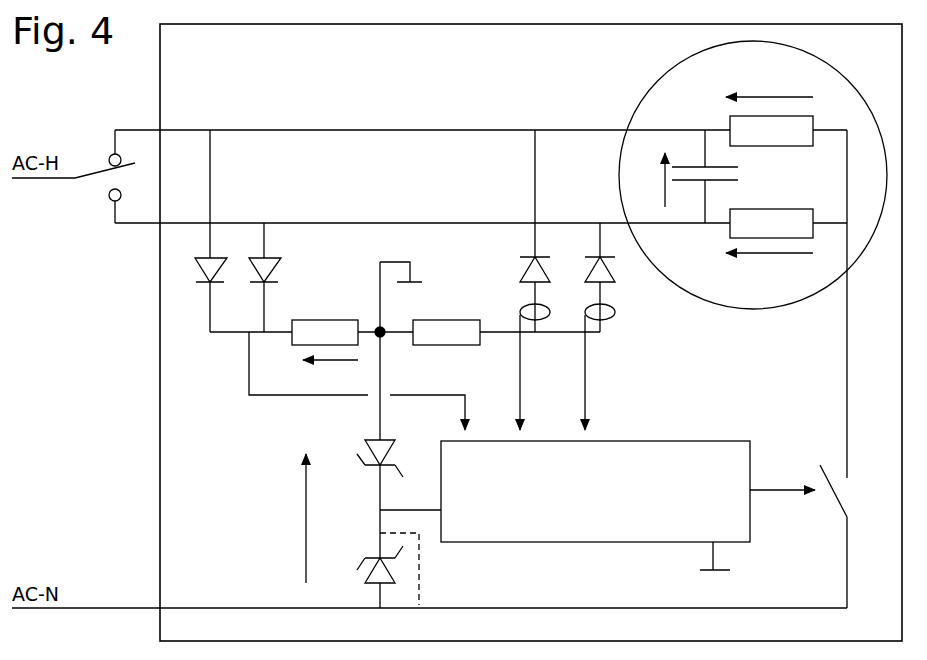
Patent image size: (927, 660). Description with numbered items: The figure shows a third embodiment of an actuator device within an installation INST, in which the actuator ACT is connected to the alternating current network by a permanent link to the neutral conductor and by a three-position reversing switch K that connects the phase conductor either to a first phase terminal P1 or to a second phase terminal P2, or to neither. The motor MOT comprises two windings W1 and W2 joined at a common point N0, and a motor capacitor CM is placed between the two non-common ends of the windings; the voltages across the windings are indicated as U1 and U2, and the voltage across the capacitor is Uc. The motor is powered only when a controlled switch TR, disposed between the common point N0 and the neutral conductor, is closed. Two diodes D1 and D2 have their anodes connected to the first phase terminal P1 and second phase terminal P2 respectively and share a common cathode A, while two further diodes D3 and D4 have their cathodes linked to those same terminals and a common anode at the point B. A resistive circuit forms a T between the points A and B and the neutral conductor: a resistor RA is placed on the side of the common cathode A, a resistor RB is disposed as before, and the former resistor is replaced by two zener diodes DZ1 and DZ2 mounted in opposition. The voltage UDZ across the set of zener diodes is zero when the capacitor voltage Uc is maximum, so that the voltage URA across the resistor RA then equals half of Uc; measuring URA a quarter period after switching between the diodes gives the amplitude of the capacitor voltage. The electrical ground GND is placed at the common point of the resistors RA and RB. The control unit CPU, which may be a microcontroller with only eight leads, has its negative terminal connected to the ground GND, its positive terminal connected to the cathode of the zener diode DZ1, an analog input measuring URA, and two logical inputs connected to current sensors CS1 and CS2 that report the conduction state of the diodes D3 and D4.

The actuator ACT is at (531, 332).
The motor MOT is at (652, 90).
The first phase terminal P1 is at (471, 128).
The second phase terminal P2 is at (471, 226).
The reversing switch K is at (81, 177).
The common point N0 is at (830, 369).
The installation INST is at (135, 457).
The first diode D1 is at (196, 231).
The second diode D2 is at (279, 277).
The third diode D3 is at (518, 231).
The fourth diode D4 is at (618, 277).
The common cathode A is at (227, 332).
The common point B is at (600, 328).
The resistor RA is at (325, 320).
The resistor RB is at (446, 320).
The voltage at the terminals of resistor RA URA is at (328, 375).
The electrical ground GND is at (421, 270).
The first current sensor CS1 is at (540, 367).
The second current sensor CS2 is at (606, 367).
The first winding W1 is at (775, 146).
The second winding W2 is at (775, 211).
The motor capacitor CM is at (723, 176).
The voltage at the terminals of the capacitor Uc is at (646, 180).
The voltage across first winding U1 is at (769, 84).
The voltage across second winding U2 is at (769, 268).
The control unit CPU is at (595, 505).
The controlled switch TR is at (798, 481).
The zener diode DZ1 is at (366, 486).
The zener diode DZ2 is at (361, 570).
The voltage at the terminals of the zener diodes UDZ is at (280, 518).